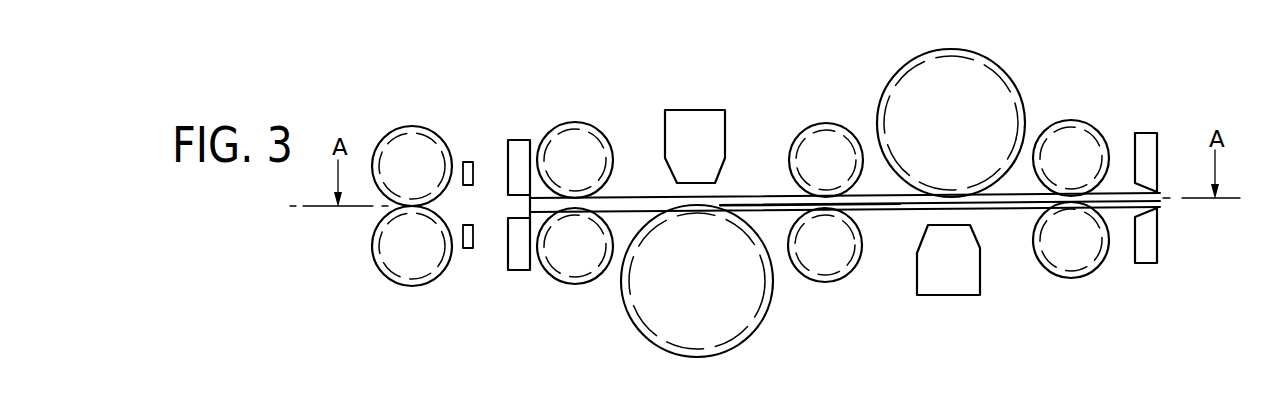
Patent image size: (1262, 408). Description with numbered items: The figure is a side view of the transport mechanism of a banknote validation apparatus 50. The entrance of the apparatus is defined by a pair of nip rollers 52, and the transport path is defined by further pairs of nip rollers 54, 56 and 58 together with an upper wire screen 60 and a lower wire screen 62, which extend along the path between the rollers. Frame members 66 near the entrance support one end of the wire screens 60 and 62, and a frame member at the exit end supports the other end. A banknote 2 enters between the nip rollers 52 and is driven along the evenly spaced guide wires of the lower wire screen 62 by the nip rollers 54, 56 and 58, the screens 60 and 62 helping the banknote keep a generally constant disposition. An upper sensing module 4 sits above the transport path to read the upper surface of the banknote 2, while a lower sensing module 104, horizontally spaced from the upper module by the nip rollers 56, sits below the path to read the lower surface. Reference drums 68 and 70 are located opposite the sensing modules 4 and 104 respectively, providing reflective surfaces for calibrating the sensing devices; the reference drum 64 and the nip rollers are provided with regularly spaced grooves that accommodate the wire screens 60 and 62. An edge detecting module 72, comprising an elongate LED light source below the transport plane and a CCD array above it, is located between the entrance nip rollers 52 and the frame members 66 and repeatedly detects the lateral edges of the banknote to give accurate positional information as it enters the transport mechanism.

The banknote 2 is at (757, 208).
The upper sensing module 4 is at (707, 120).
The banknote validation apparatus 50 is at (512, 88).
The nip rollers 52 is at (375, 183).
The nip rollers 54 is at (572, 185).
The nip rollers 56 is at (815, 245).
The nip rollers 58 is at (1048, 167).
The upper wire screen 60 is at (637, 195).
The lower wire screen 62 is at (888, 215).
The reference drum 64 is at (1152, 160).
The frame members 66 is at (518, 223).
The reference drum 68 is at (665, 322).
The reference drum 70 is at (992, 90).
The edge detecting module 72 is at (473, 175).
The lower sensing module 104 is at (955, 285).